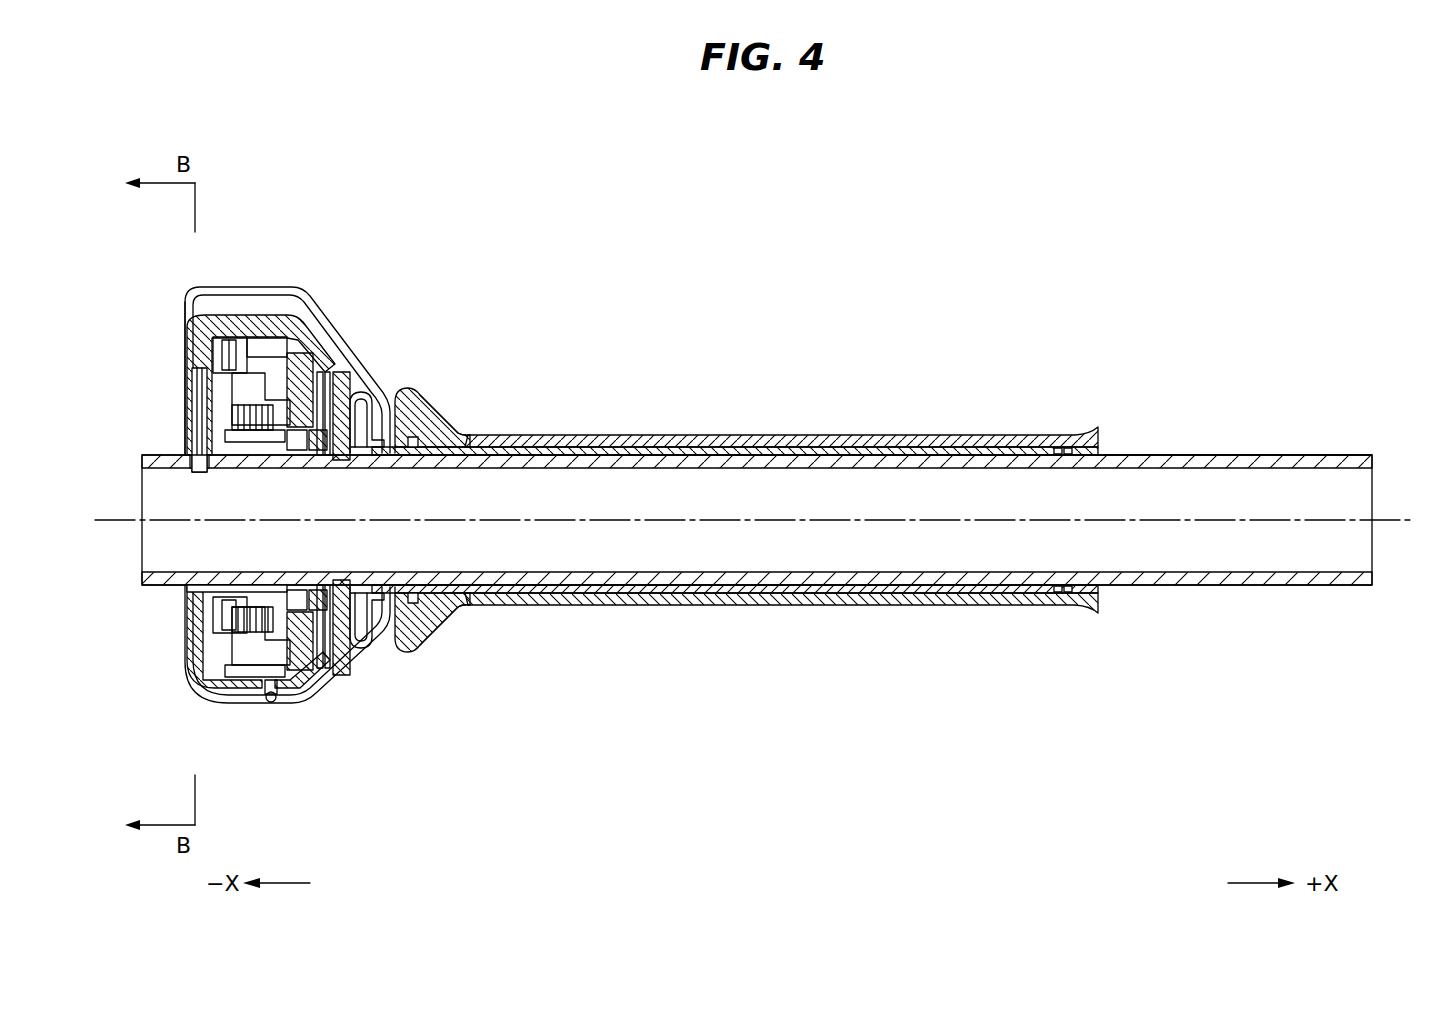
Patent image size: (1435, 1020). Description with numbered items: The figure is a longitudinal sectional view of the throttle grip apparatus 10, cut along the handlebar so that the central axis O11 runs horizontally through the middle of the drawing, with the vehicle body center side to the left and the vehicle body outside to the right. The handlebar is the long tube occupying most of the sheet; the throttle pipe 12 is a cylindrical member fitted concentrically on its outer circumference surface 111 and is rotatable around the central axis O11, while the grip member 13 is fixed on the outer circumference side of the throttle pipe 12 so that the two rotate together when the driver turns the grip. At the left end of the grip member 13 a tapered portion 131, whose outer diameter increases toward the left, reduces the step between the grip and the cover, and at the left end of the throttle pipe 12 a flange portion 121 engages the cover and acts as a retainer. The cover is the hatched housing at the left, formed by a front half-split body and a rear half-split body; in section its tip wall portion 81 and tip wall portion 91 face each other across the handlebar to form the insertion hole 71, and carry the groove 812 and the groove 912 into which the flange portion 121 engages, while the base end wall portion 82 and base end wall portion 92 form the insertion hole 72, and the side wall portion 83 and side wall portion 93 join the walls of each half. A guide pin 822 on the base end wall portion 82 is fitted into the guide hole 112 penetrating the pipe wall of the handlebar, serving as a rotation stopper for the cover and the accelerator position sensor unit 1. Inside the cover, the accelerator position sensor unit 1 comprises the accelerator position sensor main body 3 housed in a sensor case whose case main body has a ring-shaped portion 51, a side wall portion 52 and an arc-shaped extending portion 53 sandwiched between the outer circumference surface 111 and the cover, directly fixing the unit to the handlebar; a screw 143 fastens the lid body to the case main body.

The throttle grip apparatus 10 is at (1194, 183).
The outer circumference surface 111 is at (1212, 452).
The guide hole 112 is at (212, 472).
The throttle pipe 12 is at (879, 444).
The grip member 13 is at (954, 435).
The tapered portion 131 is at (437, 408).
The flange portion 121 is at (362, 420).
The insertion hole 71 is at (413, 633).
The central axis O11 is at (125, 518).
The side wall portion 83 is at (248, 335).
The screw 143 is at (187, 328).
The base end wall portion 82 is at (190, 362).
The guide pin 822 is at (195, 472).
The accelerator position sensor main body 3 is at (232, 336).
The accelerator position sensor unit 1 is at (268, 346).
The tip wall portion 81 is at (342, 372).
The groove 812 is at (361, 398).
The base end wall portion 92 is at (193, 643).
The insertion hole 72 is at (197, 592).
The extending portion 53 is at (213, 603).
The ring-shaped portion 51 is at (213, 618).
The side wall portion 52 is at (257, 667).
The side wall portion 93 is at (257, 703).
The tip wall portion 91 is at (333, 675).
The groove 912 is at (358, 630).